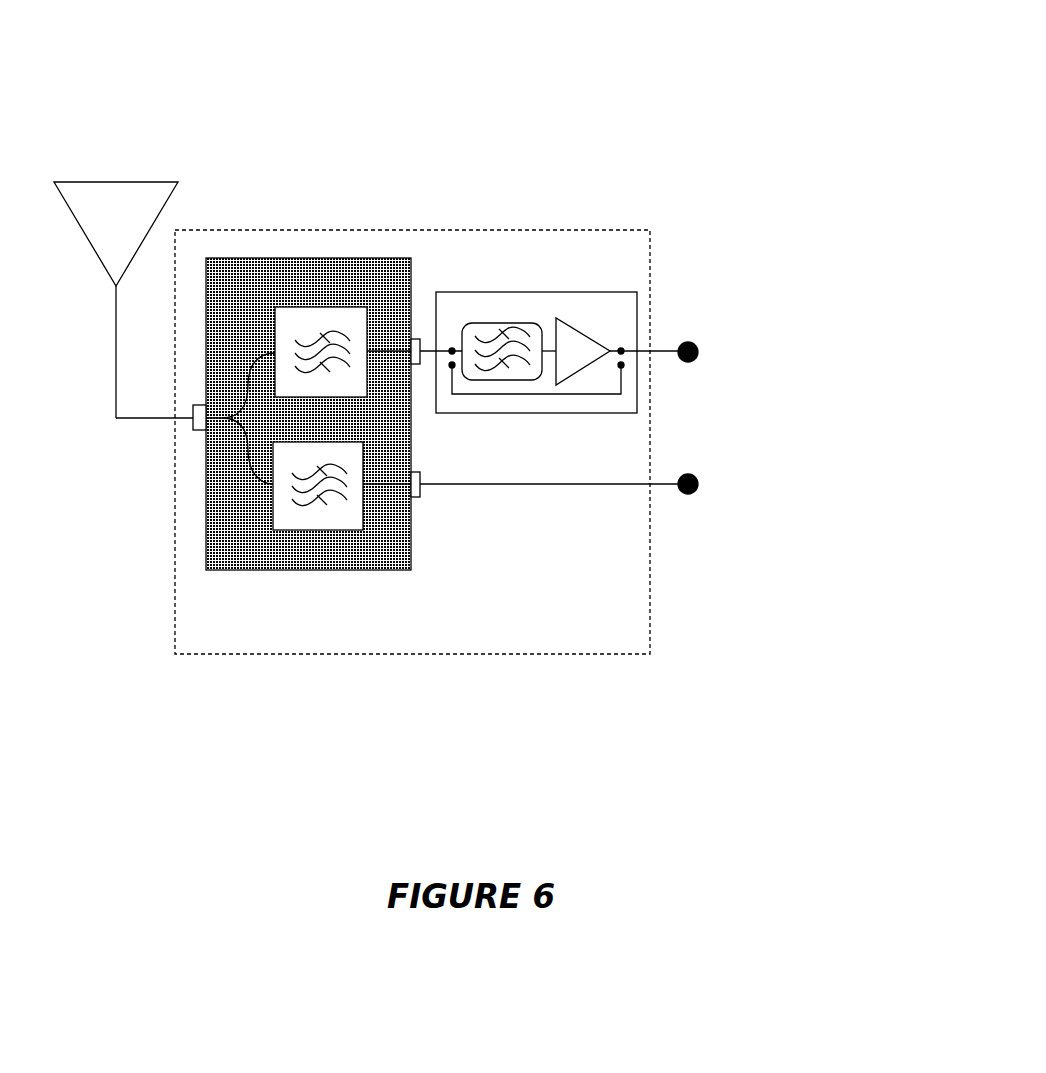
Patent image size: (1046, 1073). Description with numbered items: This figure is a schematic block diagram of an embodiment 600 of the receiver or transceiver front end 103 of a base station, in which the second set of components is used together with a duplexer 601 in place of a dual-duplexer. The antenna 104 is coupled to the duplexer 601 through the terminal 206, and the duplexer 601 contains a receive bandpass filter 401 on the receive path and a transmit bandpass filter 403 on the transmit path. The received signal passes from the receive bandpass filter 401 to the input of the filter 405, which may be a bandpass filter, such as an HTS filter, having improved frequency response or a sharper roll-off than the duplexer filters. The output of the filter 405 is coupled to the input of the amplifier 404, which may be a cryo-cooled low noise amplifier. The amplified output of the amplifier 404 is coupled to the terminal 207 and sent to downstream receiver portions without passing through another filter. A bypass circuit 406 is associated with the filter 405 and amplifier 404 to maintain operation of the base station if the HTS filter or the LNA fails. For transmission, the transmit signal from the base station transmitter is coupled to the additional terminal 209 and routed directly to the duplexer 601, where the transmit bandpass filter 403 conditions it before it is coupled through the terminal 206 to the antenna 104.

The embodiment of the receiver or transceiver front end 600 is at (567, 77).
The antenna 104 is at (166, 202).
The front end 103 is at (568, 230).
The duplexer 601 is at (364, 570).
The terminal 206 is at (197, 430).
The first receive bandpass filter 401 is at (300, 397).
The Tx band pass filter 403 is at (273, 527).
The filter 405 is at (468, 324).
The amplifier 404 is at (598, 343).
The bypass circuit 406 is at (516, 394).
The terminal 207 is at (685, 362).
The terminal 209 is at (685, 494).